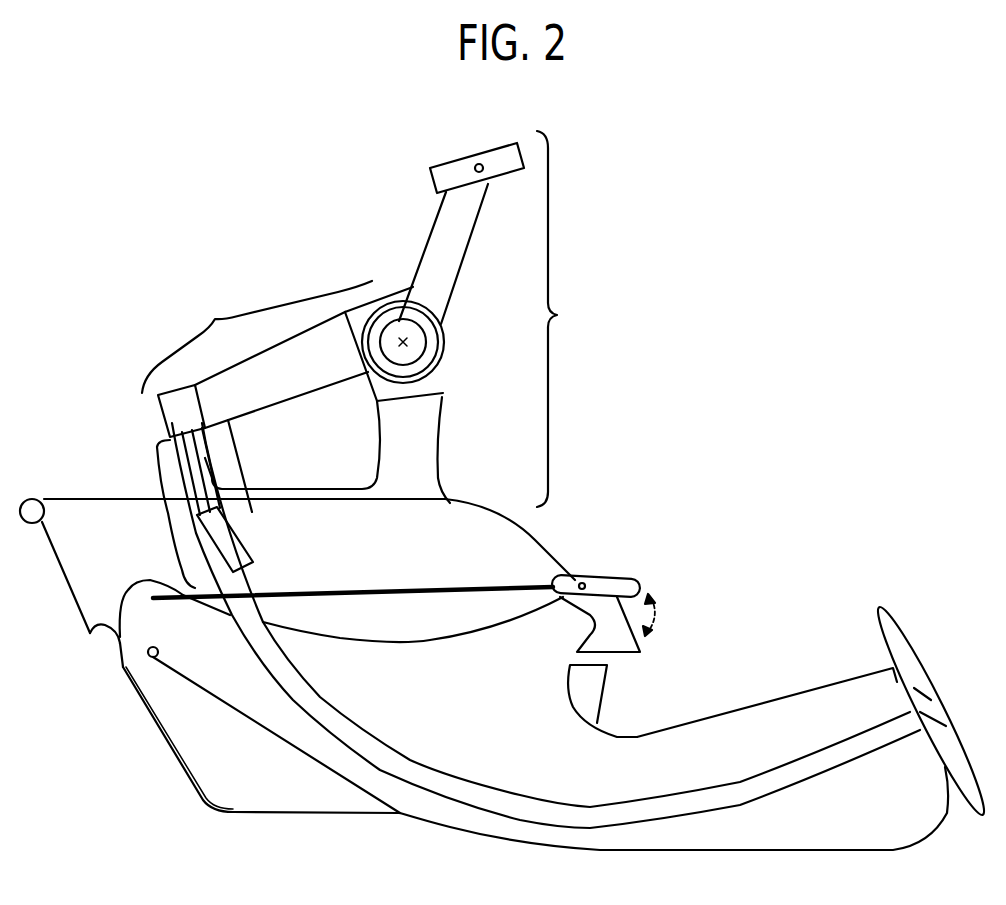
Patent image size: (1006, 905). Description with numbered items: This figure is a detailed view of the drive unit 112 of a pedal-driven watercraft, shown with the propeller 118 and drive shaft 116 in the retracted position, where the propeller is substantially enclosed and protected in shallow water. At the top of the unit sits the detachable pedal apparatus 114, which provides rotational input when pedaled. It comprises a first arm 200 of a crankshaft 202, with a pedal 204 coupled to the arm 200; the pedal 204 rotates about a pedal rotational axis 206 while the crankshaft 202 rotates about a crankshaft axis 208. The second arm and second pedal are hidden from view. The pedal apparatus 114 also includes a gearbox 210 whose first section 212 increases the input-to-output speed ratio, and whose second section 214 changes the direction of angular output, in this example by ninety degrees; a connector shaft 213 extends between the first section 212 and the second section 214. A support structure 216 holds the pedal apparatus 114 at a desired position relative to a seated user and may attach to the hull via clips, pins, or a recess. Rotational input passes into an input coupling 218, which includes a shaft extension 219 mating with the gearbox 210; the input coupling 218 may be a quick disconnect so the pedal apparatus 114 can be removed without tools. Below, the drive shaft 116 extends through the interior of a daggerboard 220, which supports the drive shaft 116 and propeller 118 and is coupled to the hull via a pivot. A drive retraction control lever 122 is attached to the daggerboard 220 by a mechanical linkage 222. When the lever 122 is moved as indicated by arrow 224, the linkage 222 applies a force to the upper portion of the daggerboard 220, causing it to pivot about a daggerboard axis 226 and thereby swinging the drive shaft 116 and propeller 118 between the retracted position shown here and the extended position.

The drive unit 112 is at (735, 197).
The detachable pedal apparatus 114 is at (570, 319).
The drive shaft 116 is at (410, 737).
The propeller 118 is at (947, 667).
The drive retraction control lever 122 is at (598, 582).
The first arm 200 is at (441, 214).
The crankshaft 202 is at (411, 264).
The pedal 204 is at (444, 172).
The pedal rotational axis 206 is at (483, 172).
The crankshaft axis 208 is at (410, 343).
The gearbox 210 is at (257, 337).
The first section 212 is at (347, 329).
The connector shaft 213 is at (269, 359).
The second section 214 is at (167, 427).
The support structure 216 is at (430, 437).
The input coupling 218 is at (168, 527).
The shaft extension 219 is at (196, 467).
The daggerboard 220 is at (425, 638).
The mechanical linkage 222 is at (418, 586).
The arrow 224 is at (652, 616).
The daggerboard axis 226 is at (147, 653).